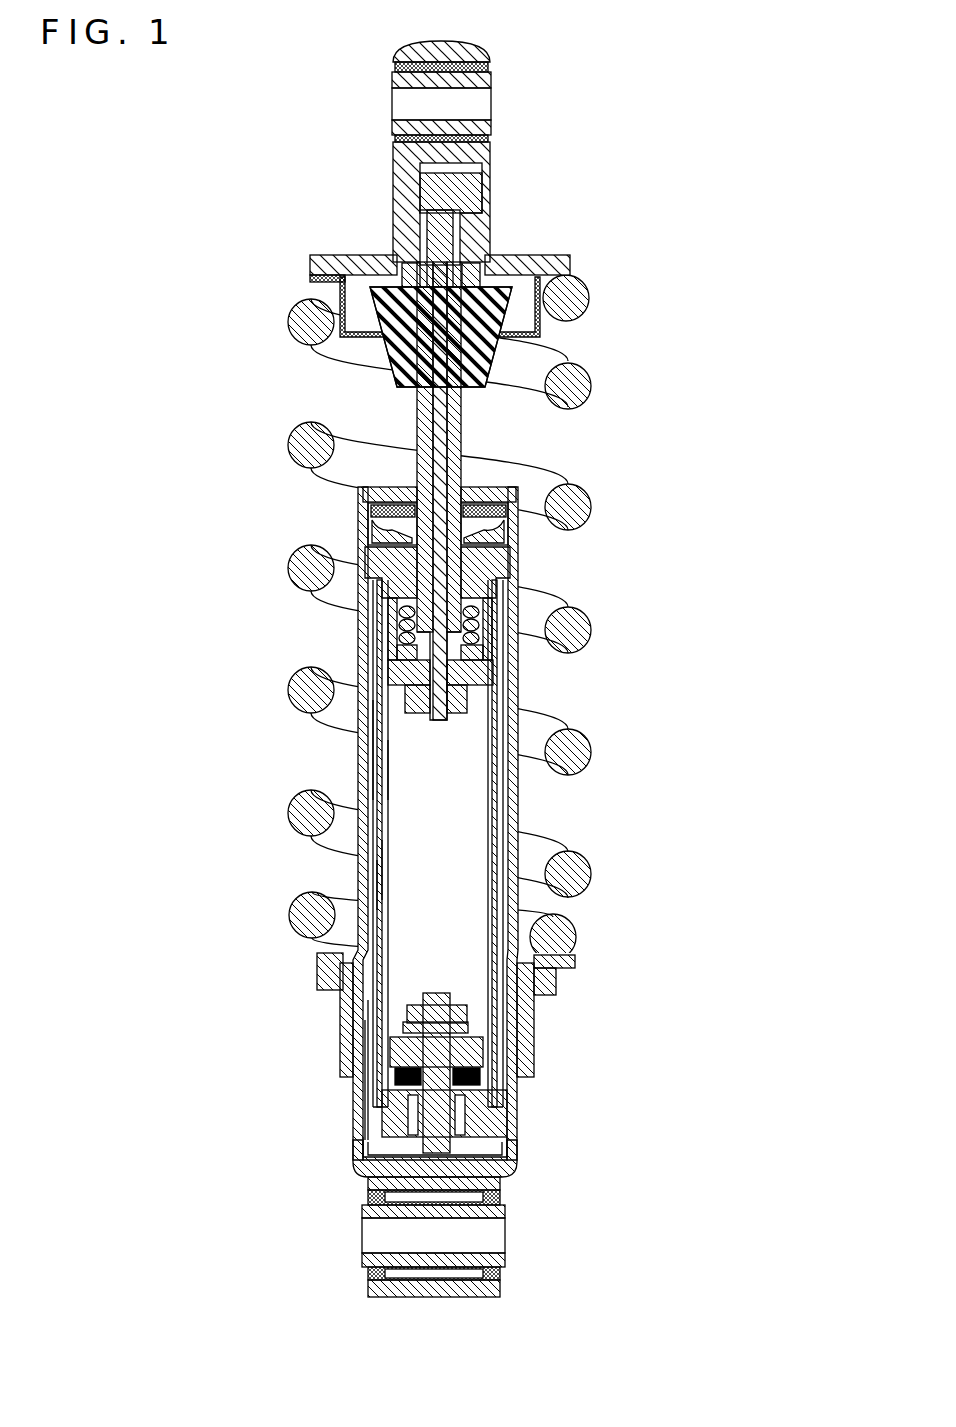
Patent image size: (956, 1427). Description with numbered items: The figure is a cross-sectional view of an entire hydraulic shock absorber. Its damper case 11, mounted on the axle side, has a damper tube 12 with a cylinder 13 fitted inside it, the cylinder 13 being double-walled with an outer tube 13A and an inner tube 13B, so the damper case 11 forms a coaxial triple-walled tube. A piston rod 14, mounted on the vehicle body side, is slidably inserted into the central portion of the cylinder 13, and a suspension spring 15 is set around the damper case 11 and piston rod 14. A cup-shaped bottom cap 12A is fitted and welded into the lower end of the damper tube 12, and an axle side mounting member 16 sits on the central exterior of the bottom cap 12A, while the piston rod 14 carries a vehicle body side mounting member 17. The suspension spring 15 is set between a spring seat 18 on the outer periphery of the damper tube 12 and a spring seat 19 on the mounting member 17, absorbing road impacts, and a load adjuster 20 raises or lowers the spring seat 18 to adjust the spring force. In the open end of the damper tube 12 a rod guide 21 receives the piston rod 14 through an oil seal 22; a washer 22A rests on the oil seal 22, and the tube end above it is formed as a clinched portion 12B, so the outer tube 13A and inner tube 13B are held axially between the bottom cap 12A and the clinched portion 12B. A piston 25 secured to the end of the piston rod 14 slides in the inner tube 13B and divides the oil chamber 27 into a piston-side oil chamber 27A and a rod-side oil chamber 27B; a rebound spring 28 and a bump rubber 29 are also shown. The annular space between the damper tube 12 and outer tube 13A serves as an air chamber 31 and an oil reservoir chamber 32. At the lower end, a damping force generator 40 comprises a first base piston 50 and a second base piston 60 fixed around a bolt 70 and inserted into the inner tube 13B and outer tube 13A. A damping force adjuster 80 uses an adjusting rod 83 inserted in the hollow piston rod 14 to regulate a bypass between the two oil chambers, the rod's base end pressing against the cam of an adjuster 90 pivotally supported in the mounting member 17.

The damper case 11 is at (358, 663).
The damper tube 12 is at (368, 703).
The bottom cap 12A is at (368, 1165).
The clinched portion 12B is at (360, 490).
The cylinder 13 is at (373, 745).
The outer tube 13A is at (373, 762).
The inner tube 13B is at (390, 772).
The piston rod 14 is at (418, 410).
The suspension spring 15 is at (340, 318).
The axle side mounting member 16 is at (372, 1287).
The vehicle body side mounting member 17 is at (416, 50).
The spring seat 18 is at (325, 953).
The spring seat 19 is at (312, 268).
The load adjuster 20 is at (340, 975).
The rod guide 21 is at (370, 568).
The oil seal 22 is at (370, 530).
The washer 22A is at (372, 505).
The piston 25 is at (488, 683).
The oil chamber 27 is at (420, 873).
The piston-side oil chamber 27A is at (420, 888).
The rod-side oil chamber 27B is at (398, 615).
The rebound spring 28 is at (505, 600).
The bump rubber 29 is at (397, 385).
The air chamber 31 is at (398, 640).
The oil reservoir chamber 32 is at (372, 1030).
The damping force generator 40 is at (458, 1000).
The first base piston 50 is at (485, 1050).
The second base piston 60 is at (497, 1115).
The bolt 70 is at (500, 1157).
The damping force adjuster 80 is at (493, 165).
The adjusting rod 83 is at (445, 418).
The adjuster 90 is at (483, 200).